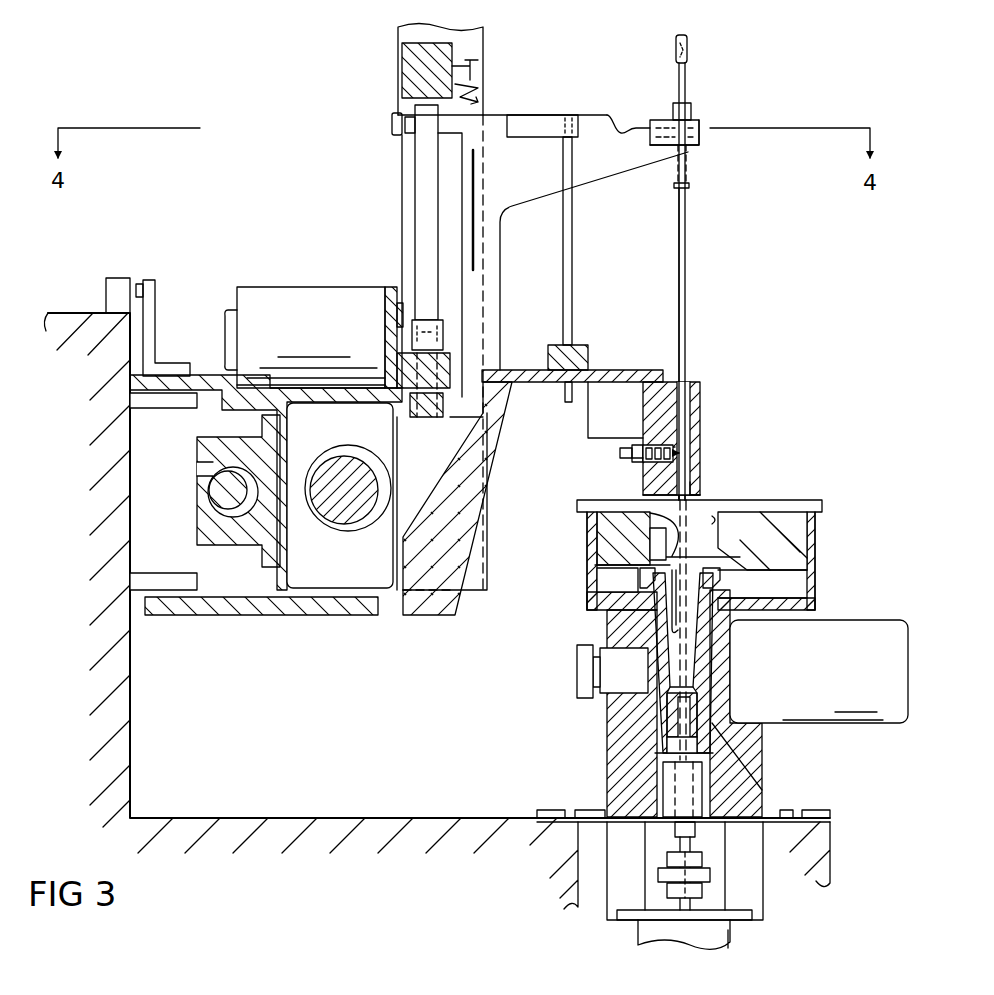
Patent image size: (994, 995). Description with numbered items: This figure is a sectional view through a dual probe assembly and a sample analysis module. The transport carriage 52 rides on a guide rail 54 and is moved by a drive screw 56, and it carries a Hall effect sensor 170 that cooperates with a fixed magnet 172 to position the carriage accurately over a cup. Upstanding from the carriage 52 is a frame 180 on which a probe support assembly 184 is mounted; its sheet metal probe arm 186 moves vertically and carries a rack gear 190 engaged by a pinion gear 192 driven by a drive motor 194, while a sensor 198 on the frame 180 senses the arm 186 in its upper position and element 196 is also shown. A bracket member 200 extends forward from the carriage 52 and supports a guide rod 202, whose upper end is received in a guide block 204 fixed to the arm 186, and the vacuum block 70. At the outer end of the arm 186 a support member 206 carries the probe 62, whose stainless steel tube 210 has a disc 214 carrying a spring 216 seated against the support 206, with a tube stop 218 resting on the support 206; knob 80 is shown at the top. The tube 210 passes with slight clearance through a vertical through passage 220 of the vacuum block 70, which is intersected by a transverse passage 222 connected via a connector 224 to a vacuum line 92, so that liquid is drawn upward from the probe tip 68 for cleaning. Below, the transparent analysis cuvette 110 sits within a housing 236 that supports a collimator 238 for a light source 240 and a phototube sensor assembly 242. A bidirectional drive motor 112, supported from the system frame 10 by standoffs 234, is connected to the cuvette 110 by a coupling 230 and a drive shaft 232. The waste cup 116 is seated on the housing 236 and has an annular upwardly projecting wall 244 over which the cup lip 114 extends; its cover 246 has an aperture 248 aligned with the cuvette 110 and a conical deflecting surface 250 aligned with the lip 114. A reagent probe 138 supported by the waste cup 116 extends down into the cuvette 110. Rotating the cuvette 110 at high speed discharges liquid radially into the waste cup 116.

The system frame 10 is at (48, 312).
The transport carriage 52 is at (388, 602).
The guide rail 54 is at (226, 488).
The drive screw 56 is at (346, 497).
The probe 62 is at (687, 280).
The probe tip 68 is at (699, 494).
The vacuum block assembly 70 is at (706, 401).
The knob 80 is at (688, 47).
The vacuum line 92 is at (618, 452).
The analysis cuvette 110 is at (704, 642).
The bidirectional drive motor 112 is at (714, 937).
The cup lip 114 is at (740, 557).
The waste cup 116 is at (818, 556).
The reagent probe 138 is at (662, 540).
The Hall effect sensor 170 is at (141, 290).
The fixed magnet 172 is at (124, 292).
The frame 180 is at (486, 46).
The probe support assembly 184 is at (702, 124).
The probe arm 186 is at (607, 170).
The rack gear 190 is at (430, 264).
The pinion gear 192 is at (425, 330).
The drive motor 194 is at (328, 292).
The switch 196 is at (480, 92).
The sensor 198 is at (396, 114).
The bracket member 200 is at (490, 440).
The guide rod 202 is at (574, 284).
The guide block 204 is at (548, 116).
The support member 206 is at (700, 139).
The stainless steel tube 210 is at (678, 232).
The disc 214 is at (690, 190).
The spring 216 is at (690, 165).
The tube stop 218 is at (672, 109).
The through passage 220 is at (698, 421).
The transverse passage 222 is at (675, 447).
The connector 224 is at (633, 462).
The coupling 230 is at (680, 897).
The drive shaft 232 is at (664, 783).
The standoff 234 is at (617, 852).
The housing 236 is at (761, 741).
The collimator 238 is at (611, 681).
The light source 240 is at (577, 663).
The phototube sensor assembly 242 is at (886, 684).
The annular upwardly projecting wall 244 is at (722, 582).
The cover 246 is at (816, 506).
The aperture 248 is at (725, 519).
The conical deflecting surface 250 is at (712, 555).